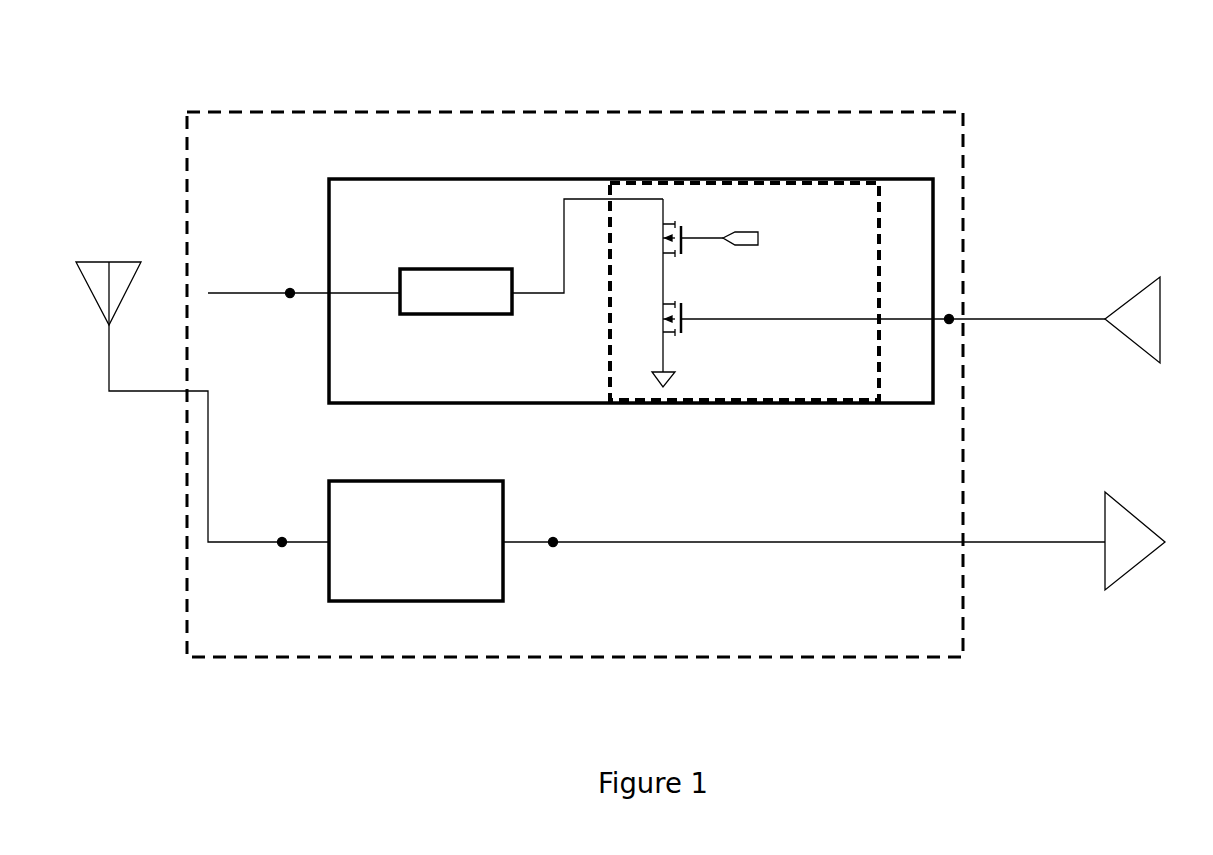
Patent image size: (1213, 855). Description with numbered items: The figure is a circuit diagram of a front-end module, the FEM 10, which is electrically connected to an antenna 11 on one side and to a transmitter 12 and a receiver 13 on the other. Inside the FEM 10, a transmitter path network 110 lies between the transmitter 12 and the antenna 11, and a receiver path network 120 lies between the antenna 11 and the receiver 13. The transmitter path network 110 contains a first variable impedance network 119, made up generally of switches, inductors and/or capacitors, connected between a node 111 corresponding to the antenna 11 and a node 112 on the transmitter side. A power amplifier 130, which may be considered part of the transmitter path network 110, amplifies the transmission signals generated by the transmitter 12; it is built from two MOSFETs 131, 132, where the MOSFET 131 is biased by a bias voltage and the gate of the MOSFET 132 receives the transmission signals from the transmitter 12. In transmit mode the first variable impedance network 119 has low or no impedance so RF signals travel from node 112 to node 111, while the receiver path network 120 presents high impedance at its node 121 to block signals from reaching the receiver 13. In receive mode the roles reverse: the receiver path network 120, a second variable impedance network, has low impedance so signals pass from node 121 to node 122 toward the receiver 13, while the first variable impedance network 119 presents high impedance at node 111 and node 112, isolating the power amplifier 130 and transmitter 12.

The front-end module 10 is at (510, 110).
The antenna 11 is at (95, 277).
The transmitter 12 is at (1147, 303).
The receiver 13 is at (1136, 533).
The transmitter path network 110 is at (395, 208).
The node 111 is at (290, 280).
The node 112 is at (953, 308).
The first variable impedance network 119 is at (436, 269).
The receiver path network 120 is at (426, 497).
The node 121 is at (283, 528).
The node 122 is at (557, 530).
The power amplifier 130 is at (778, 385).
The MOSFET 131 is at (721, 251).
The MOSFET 132 is at (648, 344).